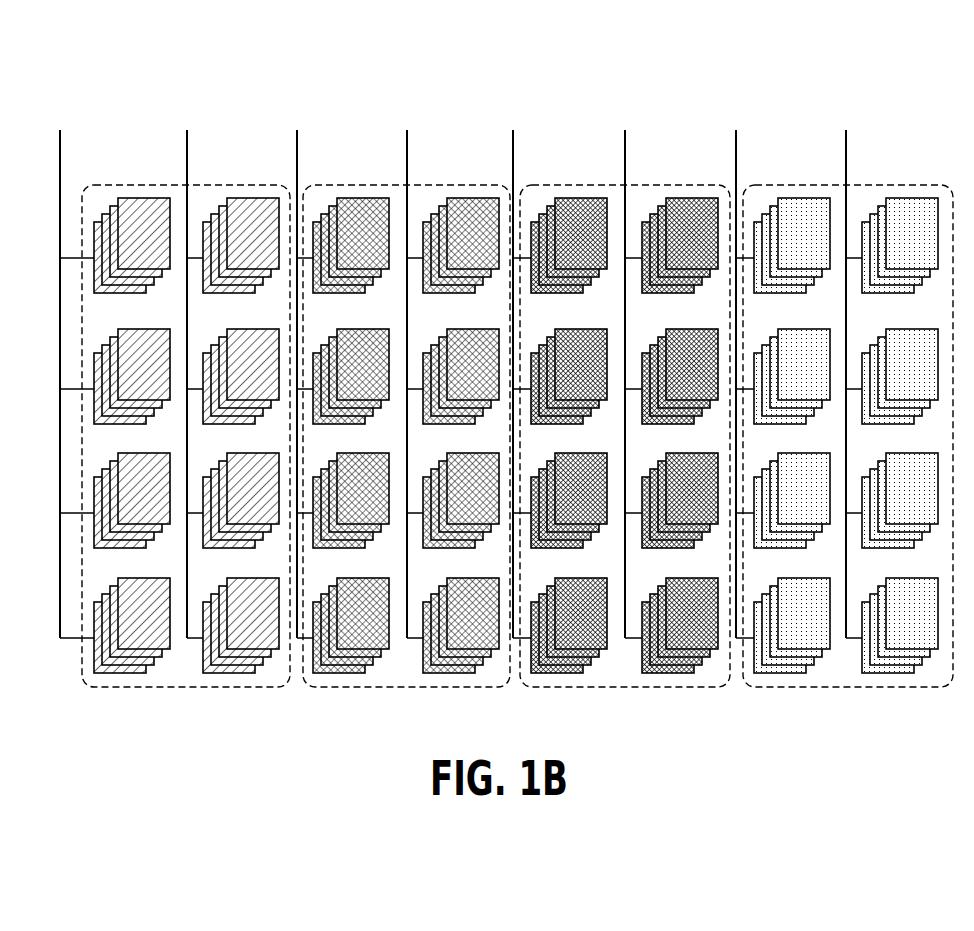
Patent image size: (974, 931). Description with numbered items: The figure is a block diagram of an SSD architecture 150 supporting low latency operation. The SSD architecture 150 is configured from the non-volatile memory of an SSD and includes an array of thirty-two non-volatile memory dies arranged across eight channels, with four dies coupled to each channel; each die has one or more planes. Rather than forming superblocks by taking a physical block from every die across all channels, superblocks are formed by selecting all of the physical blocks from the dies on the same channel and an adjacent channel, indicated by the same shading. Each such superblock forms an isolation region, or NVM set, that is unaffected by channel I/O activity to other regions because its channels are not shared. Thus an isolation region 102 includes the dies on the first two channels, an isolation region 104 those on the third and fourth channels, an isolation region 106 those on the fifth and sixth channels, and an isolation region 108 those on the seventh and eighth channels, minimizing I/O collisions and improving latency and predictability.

The SSD architecture 150 is at (655, 49).
The isolation region 102 is at (221, 186).
The isolation region 104 is at (440, 186).
The isolation region 106 is at (657, 186).
The isolation region 108 is at (884, 186).